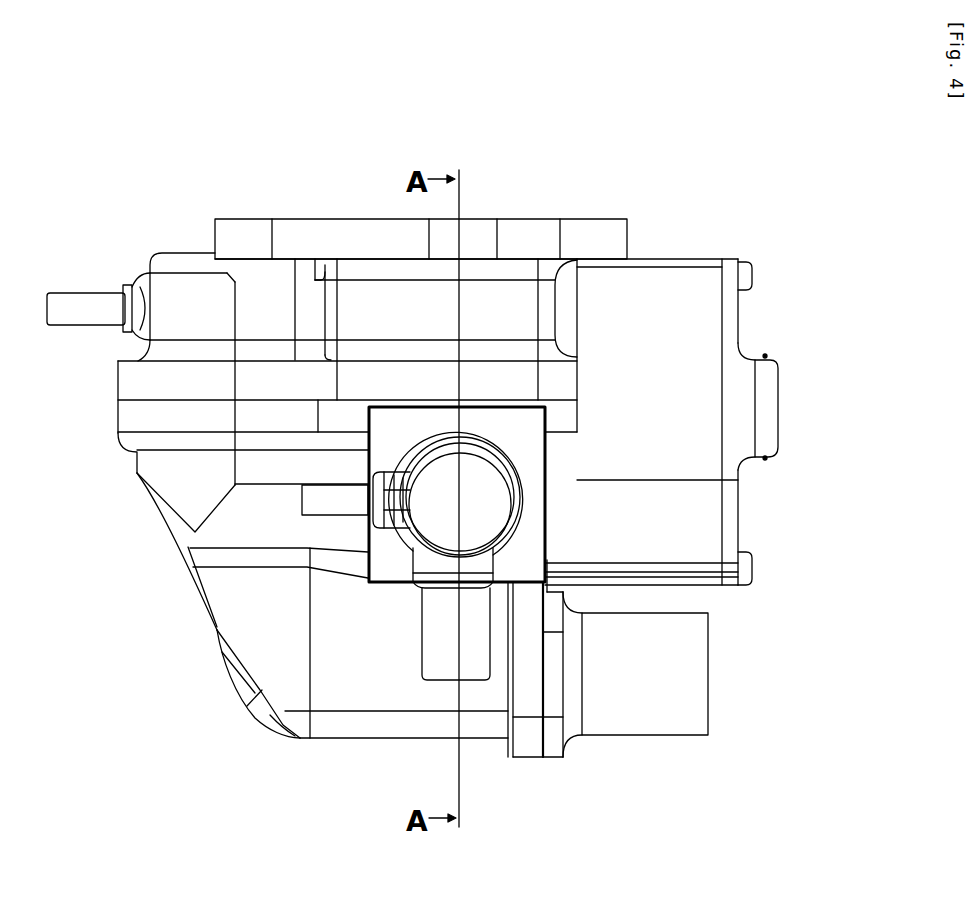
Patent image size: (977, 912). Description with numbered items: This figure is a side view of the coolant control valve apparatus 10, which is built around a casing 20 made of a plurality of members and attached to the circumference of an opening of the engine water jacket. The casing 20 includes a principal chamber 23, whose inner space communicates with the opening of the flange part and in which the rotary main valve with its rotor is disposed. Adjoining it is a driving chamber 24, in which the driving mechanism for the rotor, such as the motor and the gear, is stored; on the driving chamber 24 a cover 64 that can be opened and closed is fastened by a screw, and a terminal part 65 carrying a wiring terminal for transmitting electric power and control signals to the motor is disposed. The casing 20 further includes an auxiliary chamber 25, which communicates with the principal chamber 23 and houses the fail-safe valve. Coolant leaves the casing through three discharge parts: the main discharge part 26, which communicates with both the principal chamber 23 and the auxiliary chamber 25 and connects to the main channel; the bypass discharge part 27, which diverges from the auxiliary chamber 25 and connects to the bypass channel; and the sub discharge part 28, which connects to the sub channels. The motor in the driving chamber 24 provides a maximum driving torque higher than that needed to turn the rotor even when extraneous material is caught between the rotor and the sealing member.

The coolant control valve apparatus 10 is at (678, 257).
The casing 20 is at (685, 335).
The principal chamber 23 is at (388, 297).
The driving chamber 24 is at (700, 533).
The auxiliary chamber 25 is at (177, 420).
The main discharge part 26 is at (390, 688).
The bypass discharge part 27 is at (183, 300).
The sub discharge part 28 is at (428, 515).
The cover 64 is at (733, 502).
The terminal part 65 is at (768, 410).